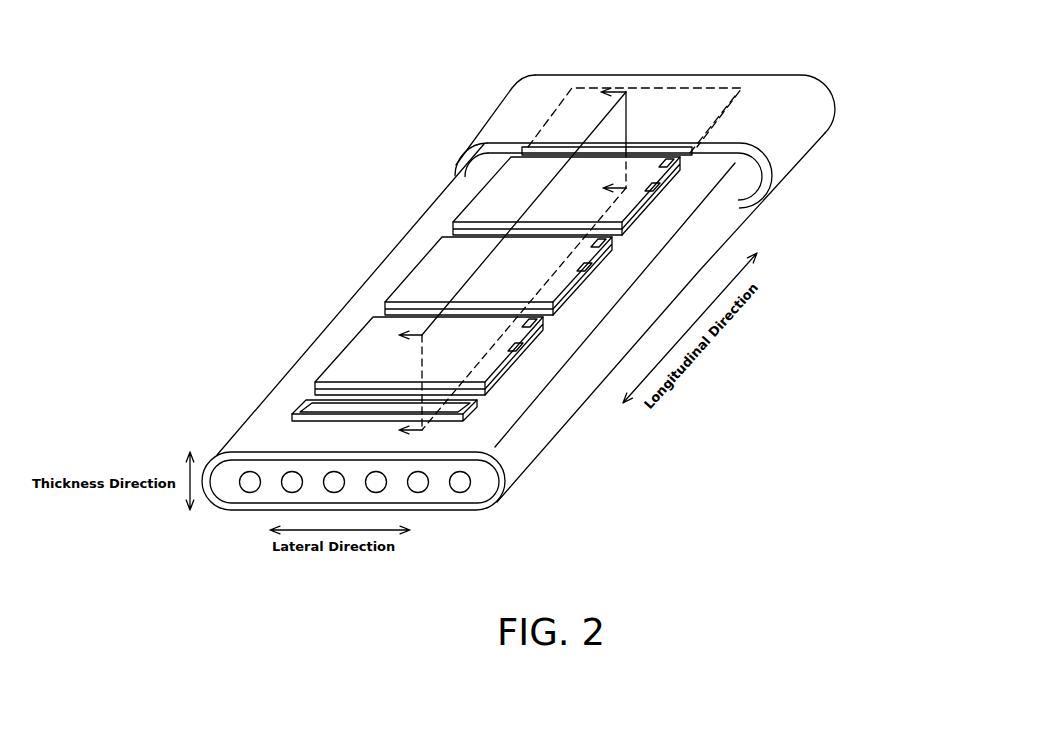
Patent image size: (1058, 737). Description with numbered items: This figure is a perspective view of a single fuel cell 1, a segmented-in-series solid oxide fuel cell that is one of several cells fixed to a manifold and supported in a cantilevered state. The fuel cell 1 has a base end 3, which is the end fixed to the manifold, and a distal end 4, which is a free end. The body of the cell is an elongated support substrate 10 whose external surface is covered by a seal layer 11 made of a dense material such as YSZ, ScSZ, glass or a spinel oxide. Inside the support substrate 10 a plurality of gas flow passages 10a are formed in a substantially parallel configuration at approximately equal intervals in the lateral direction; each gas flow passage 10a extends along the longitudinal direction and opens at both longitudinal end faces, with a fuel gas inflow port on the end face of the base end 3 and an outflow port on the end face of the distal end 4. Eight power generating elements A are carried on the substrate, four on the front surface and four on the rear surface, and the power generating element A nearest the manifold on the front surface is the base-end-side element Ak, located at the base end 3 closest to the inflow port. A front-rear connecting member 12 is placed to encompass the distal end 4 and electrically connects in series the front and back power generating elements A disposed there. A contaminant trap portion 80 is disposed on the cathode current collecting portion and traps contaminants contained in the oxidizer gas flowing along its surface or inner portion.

The fuel cell 1 is at (848, 82).
The base end 3 is at (562, 455).
The distal end 4 is at (850, 128).
The support substrate 10 is at (387, 523).
The gas flow passage 10a is at (418, 482).
The seal layer 11 is at (505, 465).
The front-rear connecting member 12 is at (800, 140).
The contaminant trap portion 80 is at (508, 92).
The power generating element A is at (490, 203).